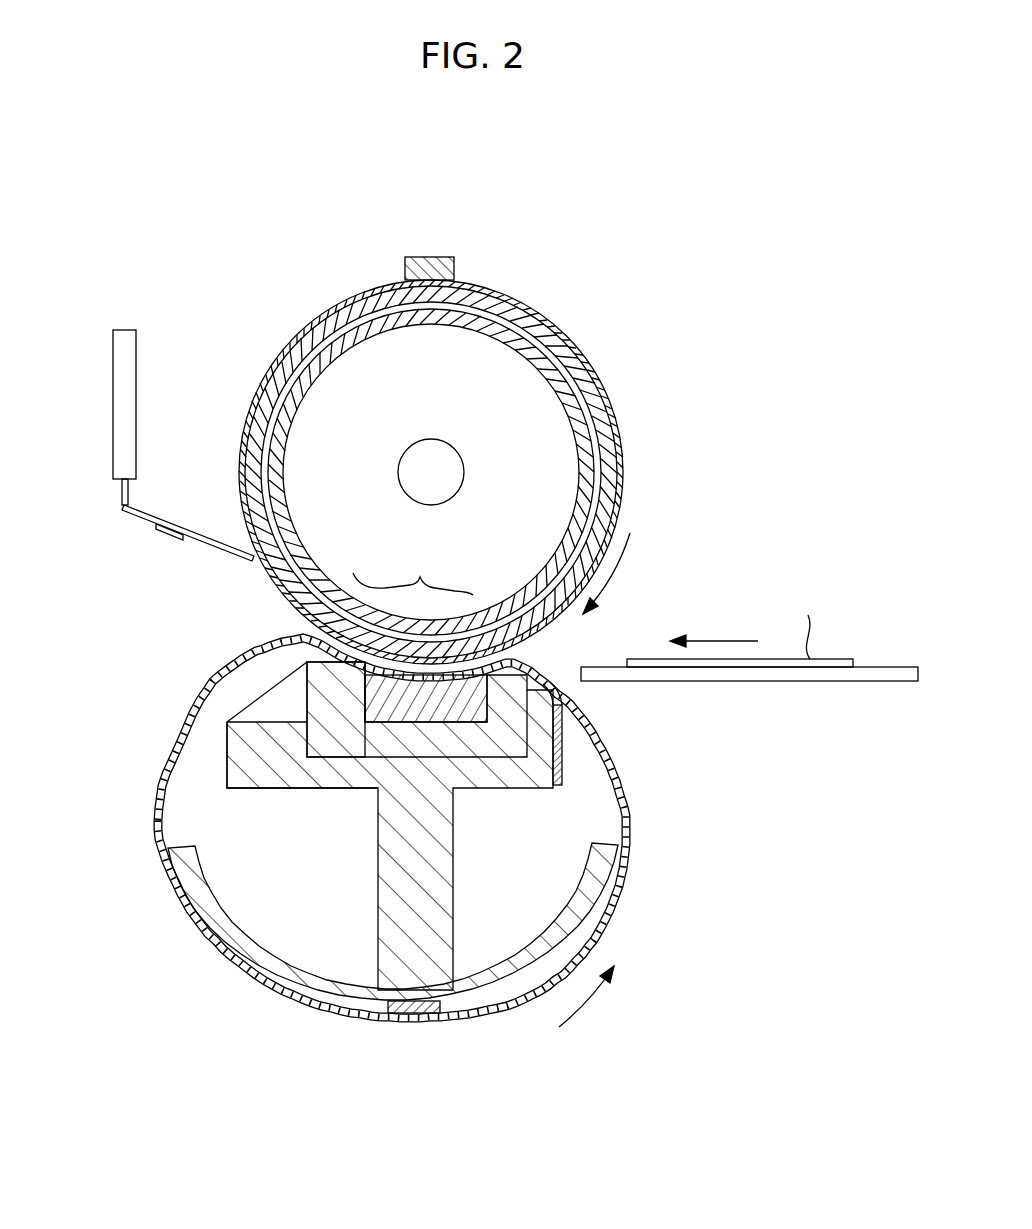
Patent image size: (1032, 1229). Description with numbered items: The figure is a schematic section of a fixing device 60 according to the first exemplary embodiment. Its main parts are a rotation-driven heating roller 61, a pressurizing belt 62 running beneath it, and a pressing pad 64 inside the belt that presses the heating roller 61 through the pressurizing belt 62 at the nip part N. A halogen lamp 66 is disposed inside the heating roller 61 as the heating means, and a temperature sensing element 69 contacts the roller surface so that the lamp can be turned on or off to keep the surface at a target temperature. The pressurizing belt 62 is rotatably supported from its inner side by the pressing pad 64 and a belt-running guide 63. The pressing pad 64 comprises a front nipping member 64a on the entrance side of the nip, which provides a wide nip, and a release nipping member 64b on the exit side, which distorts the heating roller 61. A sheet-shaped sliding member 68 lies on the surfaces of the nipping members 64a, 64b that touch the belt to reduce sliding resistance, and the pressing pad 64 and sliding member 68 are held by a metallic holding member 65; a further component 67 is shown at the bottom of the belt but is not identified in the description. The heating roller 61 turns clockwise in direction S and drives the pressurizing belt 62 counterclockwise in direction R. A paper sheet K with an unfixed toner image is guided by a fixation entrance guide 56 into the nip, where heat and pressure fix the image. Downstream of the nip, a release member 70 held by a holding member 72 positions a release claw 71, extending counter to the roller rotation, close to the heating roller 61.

The fixation entrance guide 56 is at (858, 676).
The fixing device 60 is at (452, 165).
The heating roller 61 is at (580, 334).
The pressurizing belt 62 is at (631, 812).
The belt-running guide 63 is at (596, 906).
The pressing pad 64 is at (325, 762).
The front nipping member 64a is at (463, 712).
The release nipping member 64b is at (320, 685).
The holding member 65 is at (243, 755).
The halogen lamp 66 is at (432, 452).
The temperature sensor 67 is at (416, 1014).
The sliding member 68 is at (565, 715).
The temperature sensing element 69 is at (434, 257).
The release member 70 is at (128, 552).
The release claw 71 is at (193, 530).
The holding member 72 is at (124, 490).